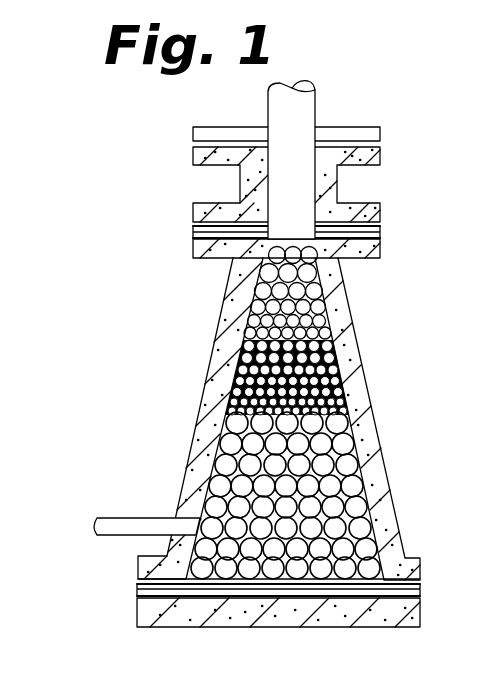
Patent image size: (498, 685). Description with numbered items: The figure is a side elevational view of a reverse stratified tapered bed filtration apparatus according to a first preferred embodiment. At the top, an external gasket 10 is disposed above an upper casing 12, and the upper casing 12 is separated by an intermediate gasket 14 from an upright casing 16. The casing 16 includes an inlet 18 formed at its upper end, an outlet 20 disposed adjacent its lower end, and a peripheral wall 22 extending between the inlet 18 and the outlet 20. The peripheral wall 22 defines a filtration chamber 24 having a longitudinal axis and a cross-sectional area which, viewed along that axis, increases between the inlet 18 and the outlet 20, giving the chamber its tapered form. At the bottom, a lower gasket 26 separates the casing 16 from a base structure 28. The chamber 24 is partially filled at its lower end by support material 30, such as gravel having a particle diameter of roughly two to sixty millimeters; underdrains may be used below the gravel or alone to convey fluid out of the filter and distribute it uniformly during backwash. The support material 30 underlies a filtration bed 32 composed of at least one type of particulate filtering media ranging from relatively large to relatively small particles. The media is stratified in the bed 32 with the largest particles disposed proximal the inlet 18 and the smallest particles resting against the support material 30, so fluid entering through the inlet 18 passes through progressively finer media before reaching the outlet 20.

The external gasket 10 is at (207, 128).
The upper casing 12 is at (378, 157).
The intermediate gasket 14 is at (193, 232).
The upright casing 16 is at (349, 303).
The inlet 18 is at (313, 240).
The outlet 20 is at (165, 536).
The peripheral wall 22 is at (197, 463).
The filtration chamber 24 is at (348, 376).
The lower gasket 26 is at (420, 593).
The base structure 28 is at (320, 624).
The support material 30 is at (362, 523).
The filtration bed 32 is at (258, 305).